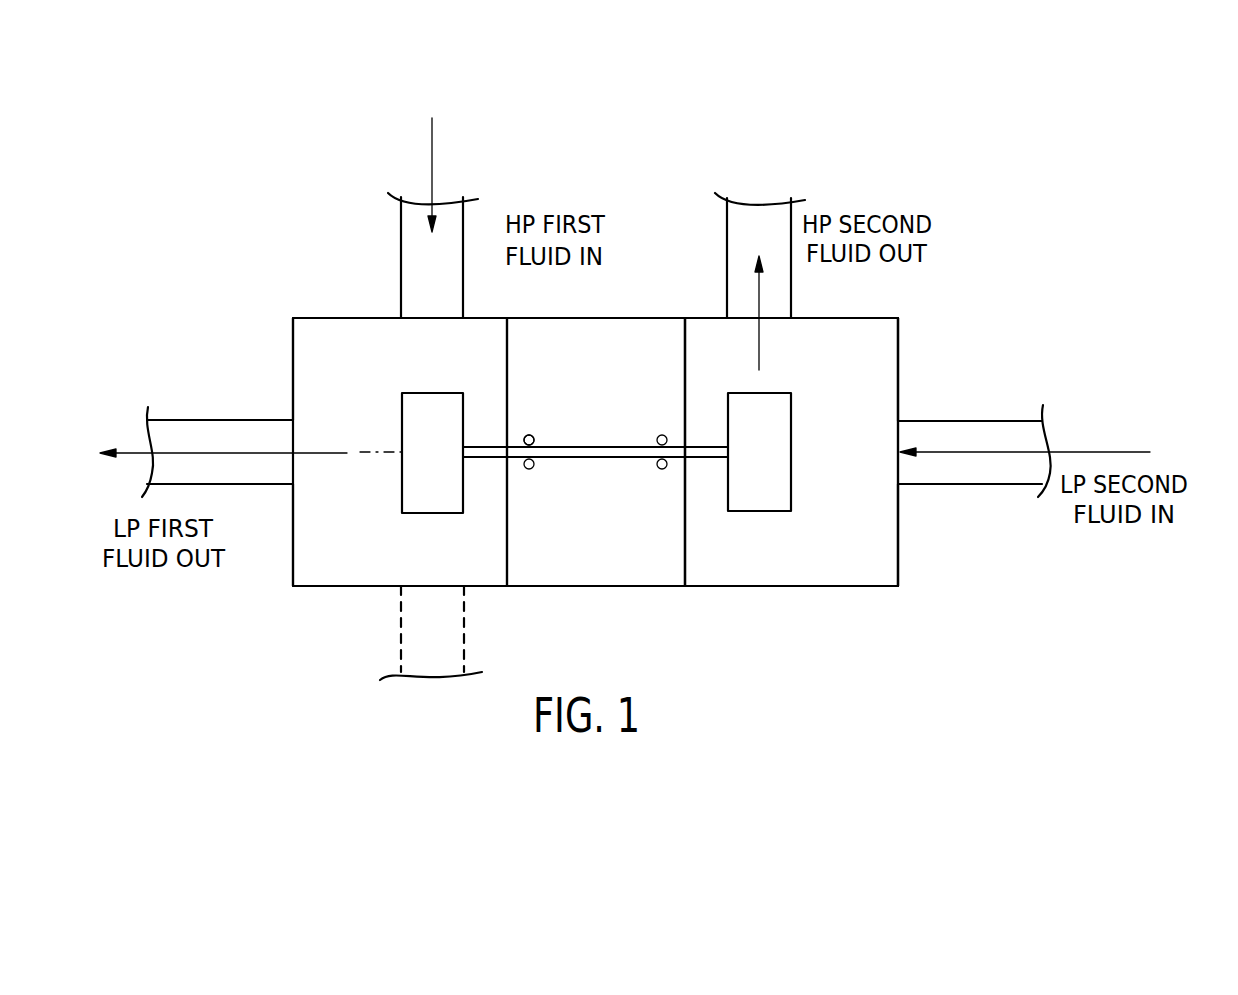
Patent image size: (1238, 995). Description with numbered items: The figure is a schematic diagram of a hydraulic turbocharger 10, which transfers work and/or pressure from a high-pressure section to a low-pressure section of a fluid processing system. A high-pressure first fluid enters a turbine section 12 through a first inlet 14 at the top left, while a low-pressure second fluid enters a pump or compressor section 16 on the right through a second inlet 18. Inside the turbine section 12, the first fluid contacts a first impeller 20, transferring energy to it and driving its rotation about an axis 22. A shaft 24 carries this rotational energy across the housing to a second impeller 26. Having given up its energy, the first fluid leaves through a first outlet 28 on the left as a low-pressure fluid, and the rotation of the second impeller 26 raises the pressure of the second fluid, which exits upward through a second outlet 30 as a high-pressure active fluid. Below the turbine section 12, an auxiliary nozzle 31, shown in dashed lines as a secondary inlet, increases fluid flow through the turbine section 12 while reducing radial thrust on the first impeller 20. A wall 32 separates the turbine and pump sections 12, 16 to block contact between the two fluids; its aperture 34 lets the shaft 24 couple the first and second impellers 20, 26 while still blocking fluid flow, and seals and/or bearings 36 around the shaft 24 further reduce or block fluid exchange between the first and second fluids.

The hydraulic turbocharger 10 is at (927, 630).
The turbine section 12 is at (352, 613).
The first inlet 14 is at (401, 258).
The pump or compressor section 16 is at (845, 622).
The second inlet 18 is at (972, 485).
The first impeller 20 is at (400, 485).
The axis 22 is at (383, 452).
The shaft 24 is at (617, 458).
The second impeller 26 is at (792, 452).
The first outlet 28 is at (217, 420).
The second outlet 30 is at (727, 262).
The auxiliary nozzle 31 is at (402, 638).
The wall 32 is at (568, 570).
The aperture 34 is at (515, 447).
The seals and/or bearings 36 is at (660, 437).